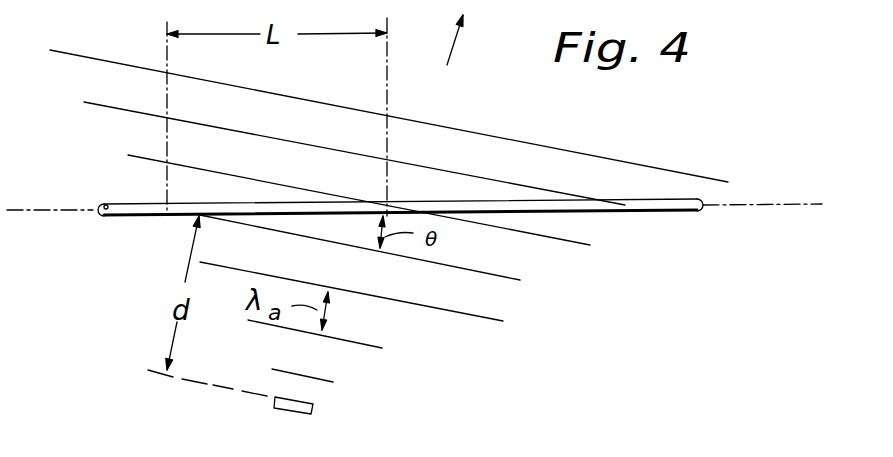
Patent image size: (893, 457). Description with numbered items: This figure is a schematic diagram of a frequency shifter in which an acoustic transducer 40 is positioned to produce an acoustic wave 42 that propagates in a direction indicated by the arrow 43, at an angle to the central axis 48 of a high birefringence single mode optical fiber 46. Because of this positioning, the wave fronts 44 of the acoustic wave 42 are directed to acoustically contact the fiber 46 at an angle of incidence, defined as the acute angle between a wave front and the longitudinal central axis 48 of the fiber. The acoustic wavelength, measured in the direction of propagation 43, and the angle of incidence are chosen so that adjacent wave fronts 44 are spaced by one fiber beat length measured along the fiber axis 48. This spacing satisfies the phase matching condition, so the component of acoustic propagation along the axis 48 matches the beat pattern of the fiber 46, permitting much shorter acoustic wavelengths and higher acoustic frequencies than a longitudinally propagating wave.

The acoustic transducer 40 is at (317, 409).
The acoustic wave 42 is at (495, 134).
The direction of propagation 43 is at (463, 42).
The wave fronts 44 is at (433, 170).
The high birefringence single mode optical fiber 46 is at (688, 213).
The central axis 48 is at (33, 212).